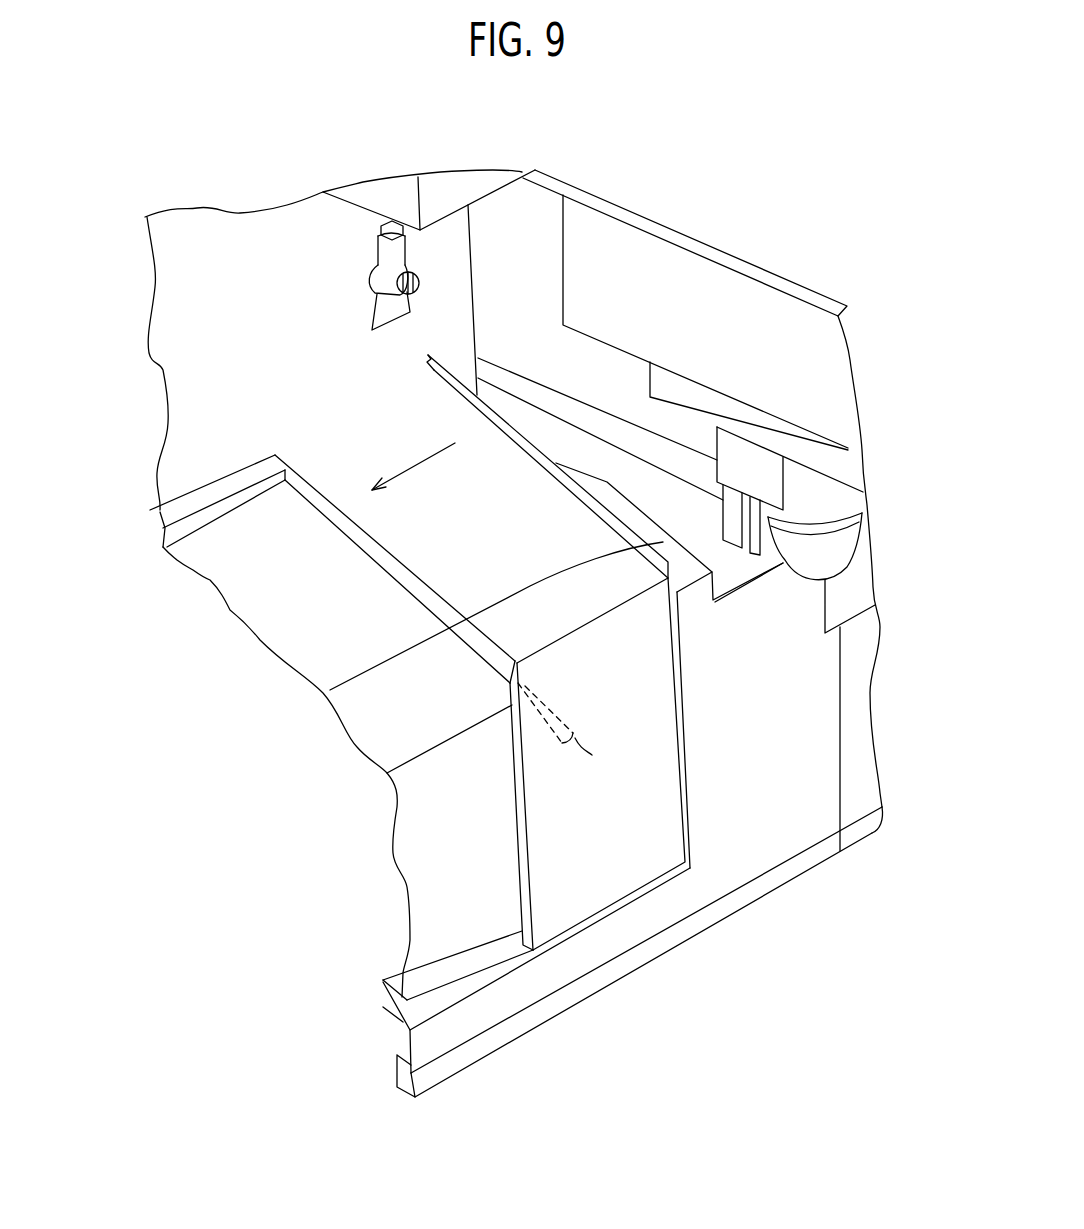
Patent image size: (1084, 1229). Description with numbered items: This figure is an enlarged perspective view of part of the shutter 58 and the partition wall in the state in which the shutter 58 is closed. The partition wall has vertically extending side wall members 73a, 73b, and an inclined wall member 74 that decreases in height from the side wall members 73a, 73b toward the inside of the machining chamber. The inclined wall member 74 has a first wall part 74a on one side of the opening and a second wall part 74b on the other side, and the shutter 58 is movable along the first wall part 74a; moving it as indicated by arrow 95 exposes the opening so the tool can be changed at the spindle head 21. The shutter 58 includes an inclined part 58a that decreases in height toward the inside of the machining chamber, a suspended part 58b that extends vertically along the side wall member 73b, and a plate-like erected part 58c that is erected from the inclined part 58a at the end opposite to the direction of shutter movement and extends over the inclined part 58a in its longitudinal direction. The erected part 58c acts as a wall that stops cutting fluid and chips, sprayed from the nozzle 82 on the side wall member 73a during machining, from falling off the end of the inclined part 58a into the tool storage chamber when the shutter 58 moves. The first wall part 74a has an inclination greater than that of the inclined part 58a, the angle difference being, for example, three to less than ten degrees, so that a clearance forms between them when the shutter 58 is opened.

The spindle head 21 is at (842, 537).
The shutter 58 is at (785, 1050).
The inclined part 58a is at (618, 582).
The suspended part 58b is at (560, 882).
The erected part 58c is at (660, 546).
The side wall member 73a is at (208, 348).
The side wall member 73b is at (447, 884).
The inclined wall member 74 is at (205, 637).
The first wall part 74a is at (357, 617).
The second wall part 74b is at (320, 690).
The nozzle 82 is at (377, 307).
The arrow 95 is at (407, 472).